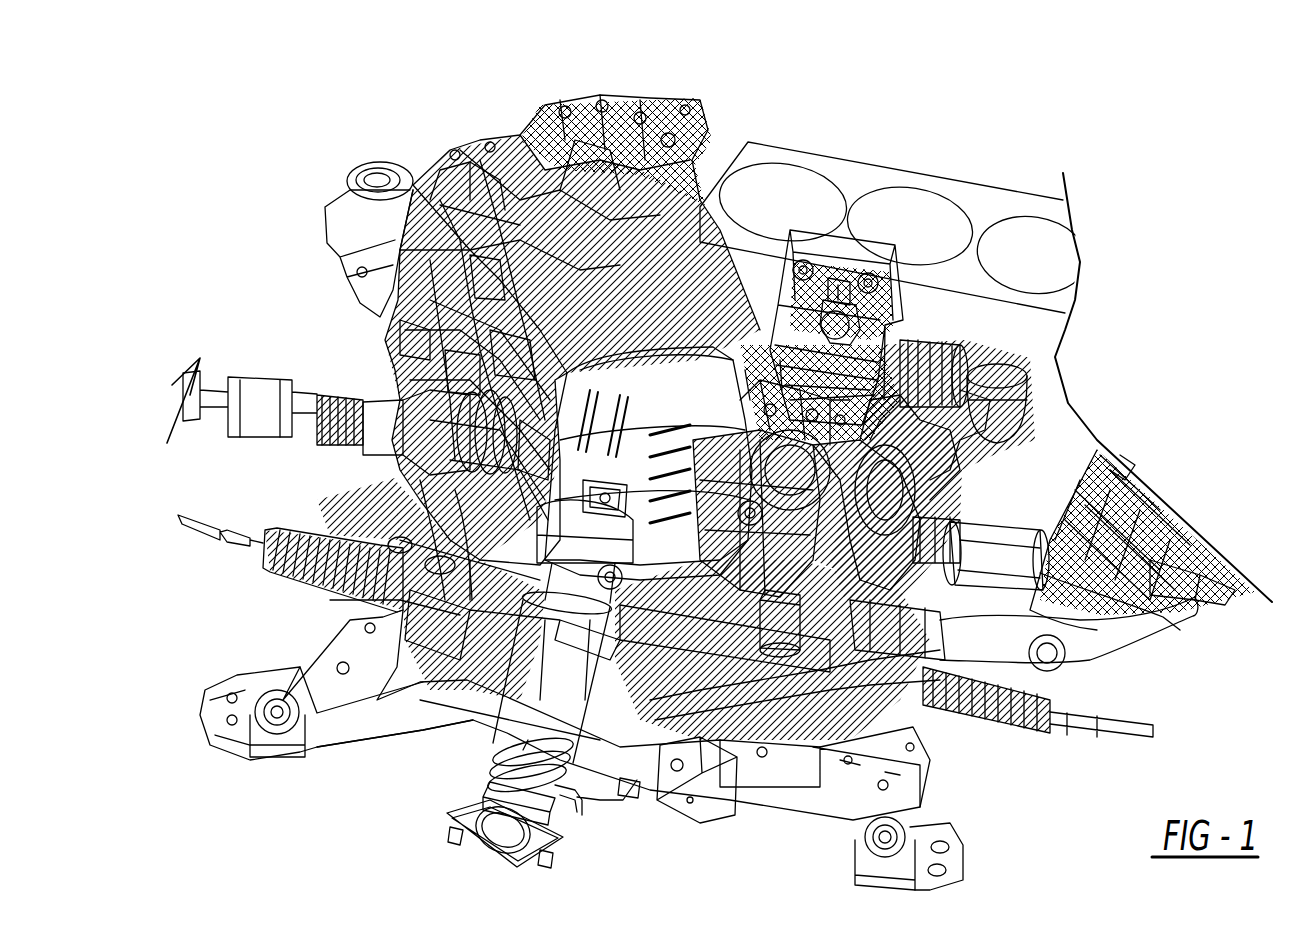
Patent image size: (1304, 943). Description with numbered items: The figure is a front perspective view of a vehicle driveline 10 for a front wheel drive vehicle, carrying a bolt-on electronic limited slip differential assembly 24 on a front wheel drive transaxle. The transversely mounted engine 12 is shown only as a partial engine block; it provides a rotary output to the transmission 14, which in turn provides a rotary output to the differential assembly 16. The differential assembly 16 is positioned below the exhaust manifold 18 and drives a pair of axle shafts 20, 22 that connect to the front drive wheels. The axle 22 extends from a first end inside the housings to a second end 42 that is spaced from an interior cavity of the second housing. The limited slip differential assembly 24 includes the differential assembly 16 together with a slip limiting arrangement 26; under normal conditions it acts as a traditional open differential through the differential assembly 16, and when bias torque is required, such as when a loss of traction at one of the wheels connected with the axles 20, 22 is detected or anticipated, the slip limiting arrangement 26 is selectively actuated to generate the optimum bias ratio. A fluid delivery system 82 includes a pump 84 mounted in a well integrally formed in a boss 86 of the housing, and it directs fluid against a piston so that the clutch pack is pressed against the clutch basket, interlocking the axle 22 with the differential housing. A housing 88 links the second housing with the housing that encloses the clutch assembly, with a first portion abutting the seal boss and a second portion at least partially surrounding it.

The vehicle driveline 10 is at (1100, 237).
The engine 12 is at (990, 205).
The transmission 14 is at (653, 280).
The differential assembly 16 is at (400, 643).
The exhaust manifold 18 is at (603, 427).
The axle shaft 20 is at (433, 420).
The axle shaft 22 is at (1010, 585).
The limited slip differential assembly 24 is at (402, 783).
The slip limiting arrangement 26 is at (775, 690).
The second end 42 is at (1033, 570).
The fluid delivery system 82 is at (850, 660).
The pump 84 is at (680, 560).
The boss 86 is at (770, 695).
The housing 88 is at (578, 647).